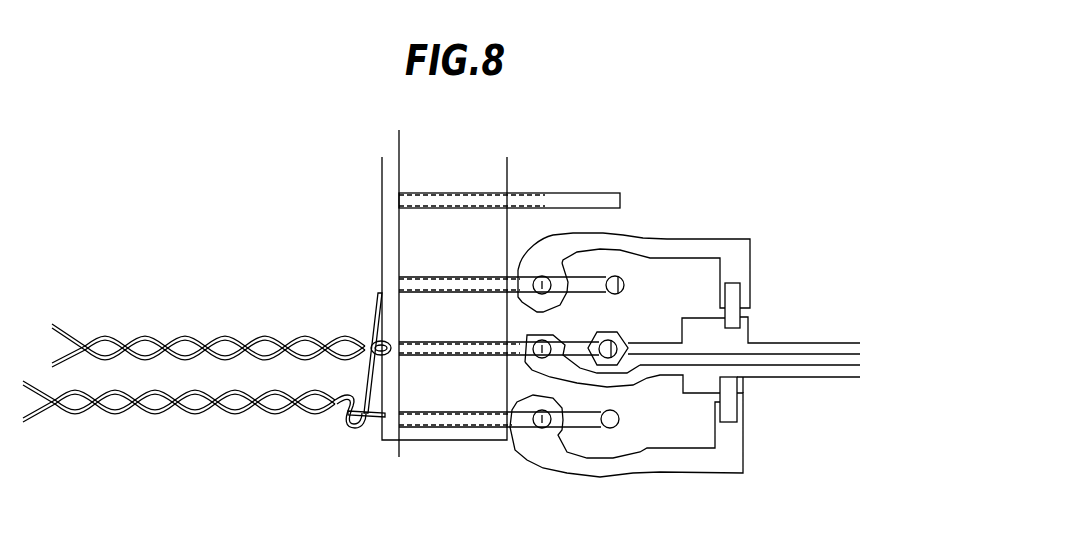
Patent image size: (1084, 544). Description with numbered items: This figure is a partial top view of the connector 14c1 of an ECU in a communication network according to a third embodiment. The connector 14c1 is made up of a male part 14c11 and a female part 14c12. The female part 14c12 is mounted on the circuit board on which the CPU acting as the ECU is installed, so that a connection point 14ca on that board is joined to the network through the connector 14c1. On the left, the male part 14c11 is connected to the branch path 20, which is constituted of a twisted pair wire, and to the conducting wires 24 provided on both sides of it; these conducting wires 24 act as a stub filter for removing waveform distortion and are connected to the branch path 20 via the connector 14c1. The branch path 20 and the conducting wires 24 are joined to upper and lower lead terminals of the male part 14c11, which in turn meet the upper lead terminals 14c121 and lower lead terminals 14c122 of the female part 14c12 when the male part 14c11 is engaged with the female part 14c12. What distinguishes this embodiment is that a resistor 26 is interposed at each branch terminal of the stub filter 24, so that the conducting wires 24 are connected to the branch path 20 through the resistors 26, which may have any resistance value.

The connector 14c1 is at (366, 293).
The female part 14c12 is at (398, 143).
The male part 14c11 is at (382, 173).
The upper lead terminals 14c121 is at (637, 383).
The lower lead terminals 14c122 is at (670, 238).
The connection point 14ca is at (833, 263).
The branch path 20 is at (282, 332).
The conducting wires 24 is at (283, 407).
The resistor 26 is at (740, 300).